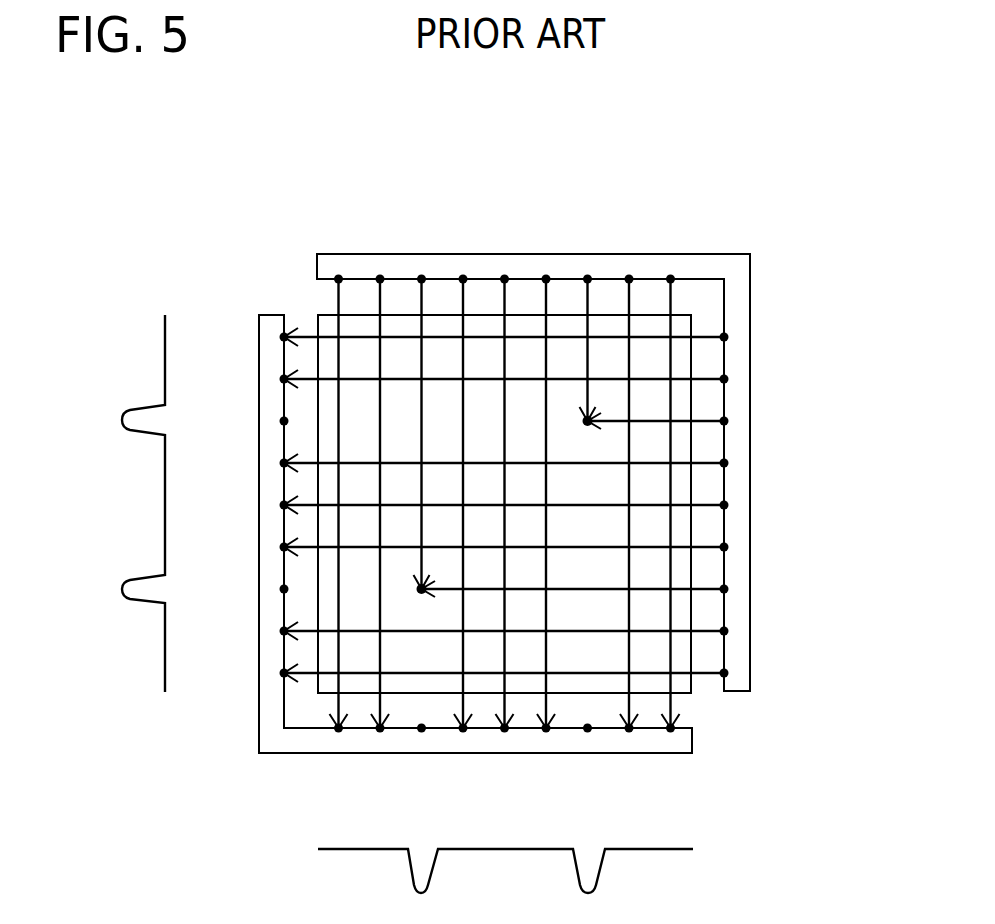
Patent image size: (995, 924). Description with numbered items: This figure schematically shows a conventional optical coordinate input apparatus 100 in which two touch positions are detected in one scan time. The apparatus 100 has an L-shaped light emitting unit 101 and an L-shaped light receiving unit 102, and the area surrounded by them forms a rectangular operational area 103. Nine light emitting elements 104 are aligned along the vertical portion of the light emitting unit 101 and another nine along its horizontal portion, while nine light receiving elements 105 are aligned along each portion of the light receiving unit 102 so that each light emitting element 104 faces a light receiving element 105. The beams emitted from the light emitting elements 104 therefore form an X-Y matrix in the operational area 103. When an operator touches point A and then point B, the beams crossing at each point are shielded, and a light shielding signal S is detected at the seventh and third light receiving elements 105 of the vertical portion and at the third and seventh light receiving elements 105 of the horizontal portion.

The optical coordinate input apparatus 100 is at (718, 222).
The light emitting unit 101 is at (751, 346).
The light receiving unit 102 is at (258, 688).
The operational area 103 is at (649, 302).
The light emitting element 104 is at (338, 279).
The light receiving element 105 is at (284, 421).
The light shielding signal S is at (140, 432).